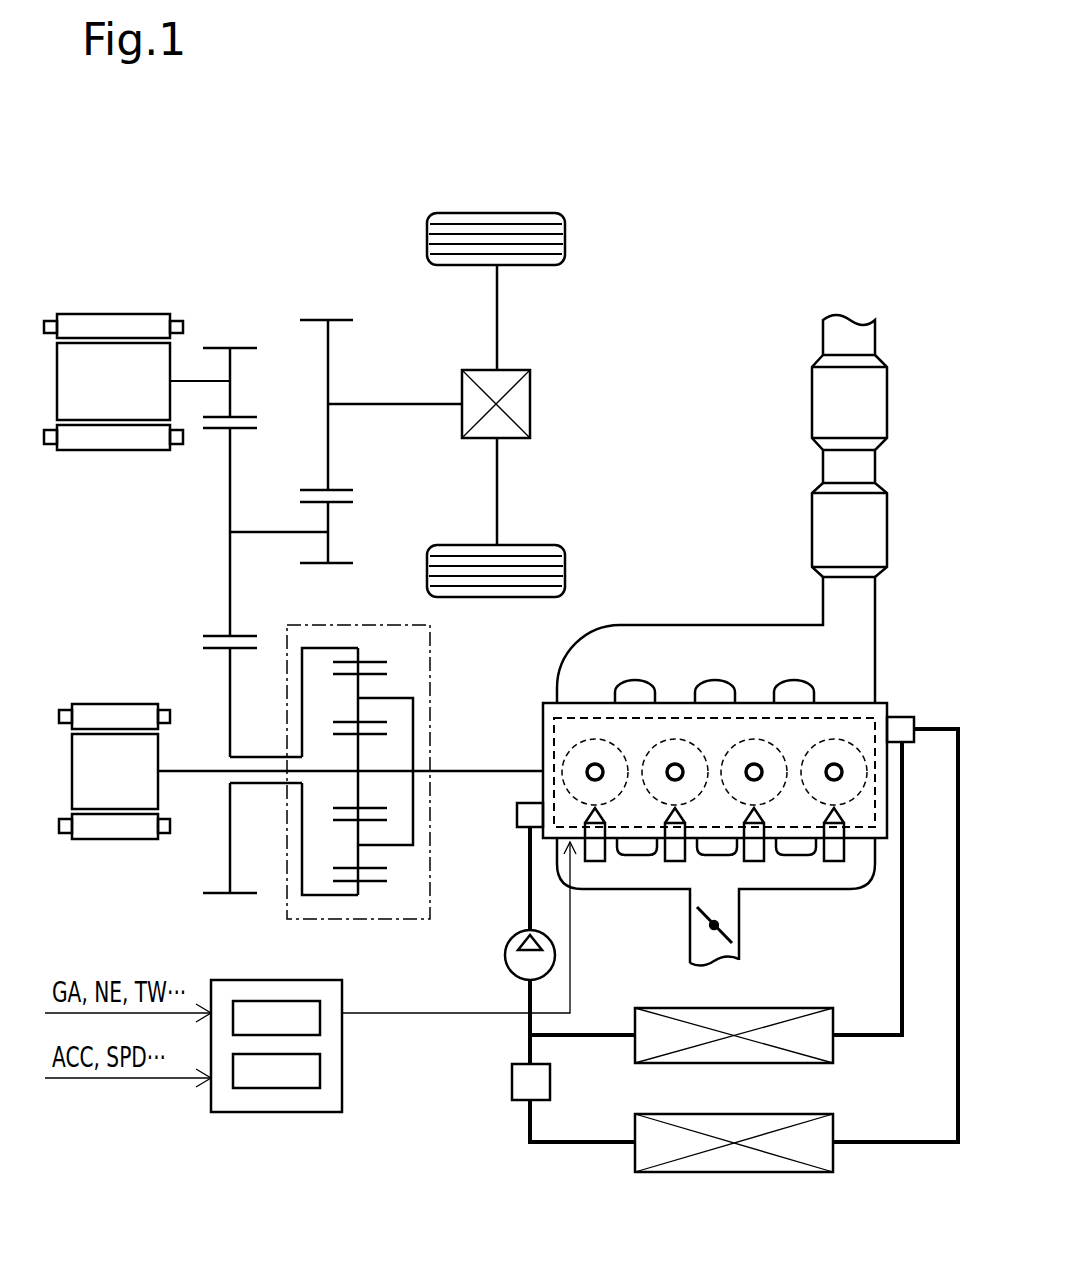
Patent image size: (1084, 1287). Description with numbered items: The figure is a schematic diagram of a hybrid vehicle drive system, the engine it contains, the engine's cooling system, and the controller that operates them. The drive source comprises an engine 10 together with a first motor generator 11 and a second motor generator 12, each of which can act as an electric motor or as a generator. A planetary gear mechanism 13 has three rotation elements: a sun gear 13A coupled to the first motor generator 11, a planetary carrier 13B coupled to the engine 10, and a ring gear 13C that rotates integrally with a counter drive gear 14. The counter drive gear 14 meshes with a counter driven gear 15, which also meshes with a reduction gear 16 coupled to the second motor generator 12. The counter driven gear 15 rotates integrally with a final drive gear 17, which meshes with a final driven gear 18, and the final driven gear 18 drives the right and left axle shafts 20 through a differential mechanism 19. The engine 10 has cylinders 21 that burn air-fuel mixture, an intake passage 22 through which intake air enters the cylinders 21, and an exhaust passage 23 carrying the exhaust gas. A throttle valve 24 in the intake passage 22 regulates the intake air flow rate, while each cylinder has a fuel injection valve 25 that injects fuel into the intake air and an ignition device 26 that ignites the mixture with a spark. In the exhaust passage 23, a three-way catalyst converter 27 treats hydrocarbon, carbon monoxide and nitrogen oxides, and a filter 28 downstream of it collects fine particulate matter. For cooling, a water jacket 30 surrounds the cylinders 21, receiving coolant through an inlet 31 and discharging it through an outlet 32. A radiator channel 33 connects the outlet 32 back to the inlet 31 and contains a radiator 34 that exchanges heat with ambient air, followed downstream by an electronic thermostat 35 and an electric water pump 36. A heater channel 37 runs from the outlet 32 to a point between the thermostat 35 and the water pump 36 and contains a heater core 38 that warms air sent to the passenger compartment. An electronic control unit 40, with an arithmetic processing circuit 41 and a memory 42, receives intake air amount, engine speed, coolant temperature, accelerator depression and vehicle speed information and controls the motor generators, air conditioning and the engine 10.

The engine 10 is at (536, 683).
The first motor generator 11 is at (115, 842).
The second motor generator 12 is at (112, 452).
The planetary gear mechanism 13 is at (360, 919).
The sun gear 13A is at (360, 755).
The planetary carrier 13B is at (415, 815).
The ring gear 13C is at (333, 895).
The counter drive gear 14 is at (230, 682).
The counter driven gear 15 is at (230, 575).
The reduction gear 16 is at (232, 367).
The final drive gear 17 is at (330, 518).
The final driven gear 18 is at (330, 445).
The differential mechanism 19 is at (530, 400).
The axle shafts 20 is at (497, 315).
The cylinders 21 is at (593, 738).
The intake passage 22 is at (690, 937).
The exhaust passage 23 is at (875, 602).
The throttle valve 24 is at (733, 940).
The fuel injection valve 25 is at (673, 862).
The ignition device 26 is at (667, 769).
The three-way catalyst converter 27 is at (812, 528).
The filter 28 is at (812, 400).
The water jacket 30 is at (554, 735).
The inlet 31 is at (517, 817).
The outlet 32 is at (899, 717).
The radiator channel 33 is at (867, 1145).
The radiator 34 is at (733, 1172).
The electronic thermostat 35 is at (512, 1080).
The electric water pump 36 is at (505, 953).
The heater channel 37 is at (867, 1037).
The heater core 38 is at (733, 1065).
The electronic control unit 40 is at (342, 1075).
The arithmetic processing circuit 41 is at (263, 1001).
The memory 42 is at (263, 1088).